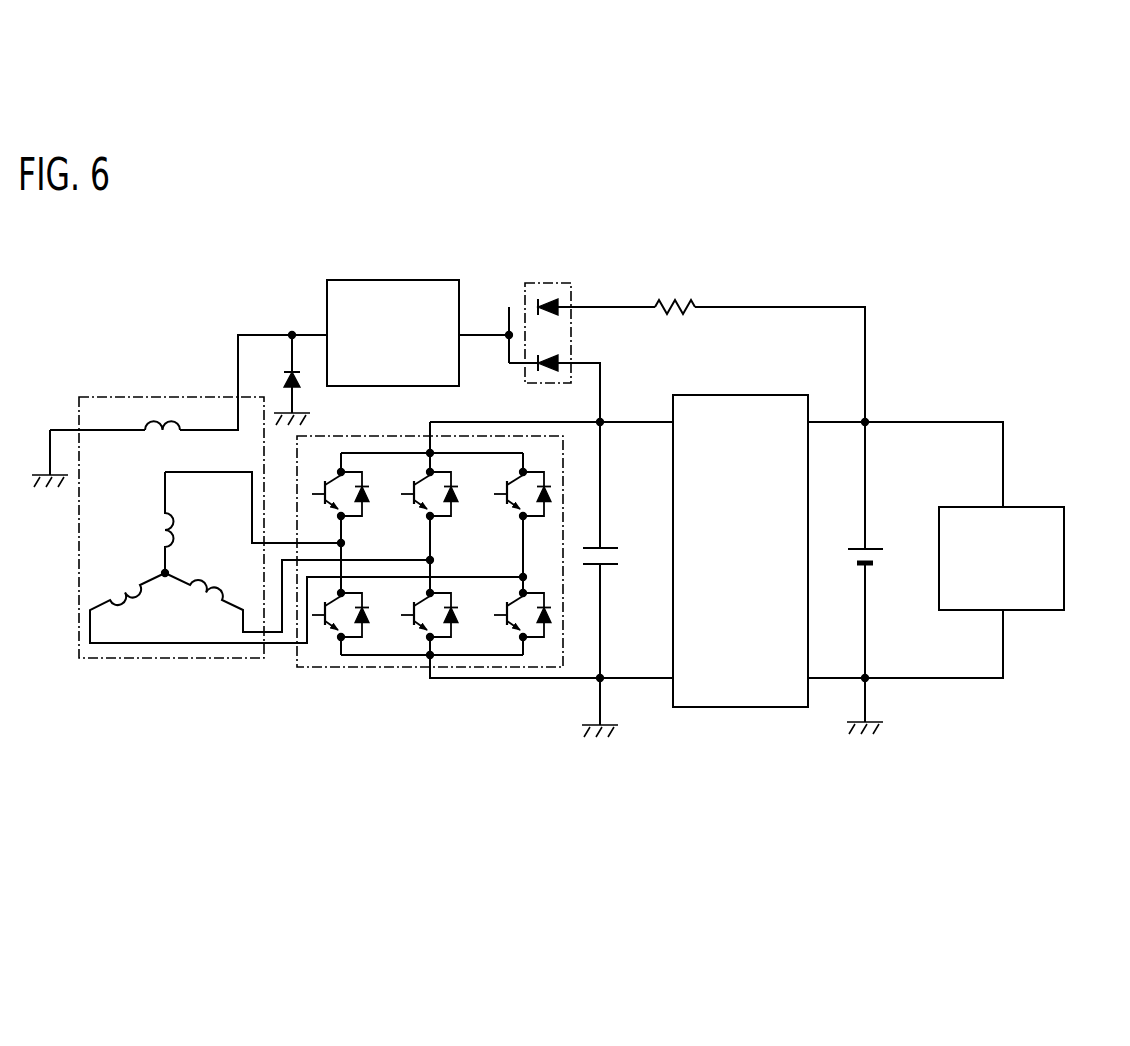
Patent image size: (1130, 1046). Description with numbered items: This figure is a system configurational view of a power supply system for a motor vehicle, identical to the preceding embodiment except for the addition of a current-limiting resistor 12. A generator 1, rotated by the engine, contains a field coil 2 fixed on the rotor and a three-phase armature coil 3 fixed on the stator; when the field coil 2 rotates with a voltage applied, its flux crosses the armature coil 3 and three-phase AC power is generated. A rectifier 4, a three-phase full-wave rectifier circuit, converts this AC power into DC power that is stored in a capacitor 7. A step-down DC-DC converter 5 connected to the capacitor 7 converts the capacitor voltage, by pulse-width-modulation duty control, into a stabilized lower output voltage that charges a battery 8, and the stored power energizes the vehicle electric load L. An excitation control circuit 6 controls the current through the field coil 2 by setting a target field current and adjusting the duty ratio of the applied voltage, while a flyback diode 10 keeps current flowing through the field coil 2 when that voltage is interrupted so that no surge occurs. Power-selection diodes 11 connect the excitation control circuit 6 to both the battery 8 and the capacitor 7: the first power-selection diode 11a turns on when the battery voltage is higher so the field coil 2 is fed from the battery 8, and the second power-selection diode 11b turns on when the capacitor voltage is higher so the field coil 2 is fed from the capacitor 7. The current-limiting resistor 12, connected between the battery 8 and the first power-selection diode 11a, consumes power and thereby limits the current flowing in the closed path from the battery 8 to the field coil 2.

The generator 1 is at (113, 662).
The field coil 2 is at (156, 414).
The three-phase armature coil 3 is at (195, 623).
The rectifier 4 is at (373, 671).
The DC-DC converter 5 is at (740, 712).
The excitation control circuit 6 is at (366, 278).
The capacitor 7 is at (622, 566).
The battery 8 is at (890, 565).
The flyback diode 10 is at (276, 370).
The power-selection diodes 11 is at (546, 274).
The first power-selection diode 11a is at (563, 316).
The second power-selection diode 11b is at (545, 373).
The current-limiting resistor 12 is at (673, 282).
The electric load L is at (1030, 613).